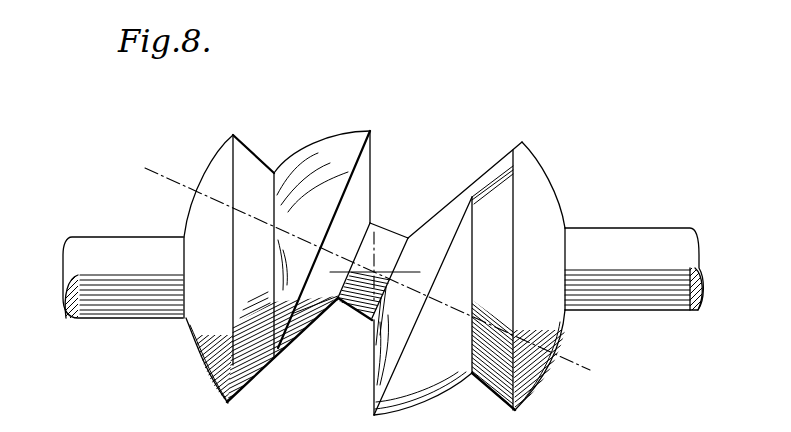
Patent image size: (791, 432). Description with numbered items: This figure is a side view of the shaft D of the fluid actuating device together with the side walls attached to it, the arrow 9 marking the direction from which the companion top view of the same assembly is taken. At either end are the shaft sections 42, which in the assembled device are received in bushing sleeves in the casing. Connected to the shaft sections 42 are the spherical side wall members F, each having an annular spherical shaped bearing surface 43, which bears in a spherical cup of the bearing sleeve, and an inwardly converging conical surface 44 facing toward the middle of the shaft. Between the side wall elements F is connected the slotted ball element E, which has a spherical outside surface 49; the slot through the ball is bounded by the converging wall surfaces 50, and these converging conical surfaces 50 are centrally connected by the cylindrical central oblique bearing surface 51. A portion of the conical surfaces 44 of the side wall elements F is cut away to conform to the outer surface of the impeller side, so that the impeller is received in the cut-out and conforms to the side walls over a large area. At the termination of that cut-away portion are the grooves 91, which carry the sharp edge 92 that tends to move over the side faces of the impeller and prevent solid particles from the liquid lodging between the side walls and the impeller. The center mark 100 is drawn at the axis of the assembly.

The arrow 9 is at (371, 66).
The shaft sections 42 is at (122, 243).
The annular spherical shaped bearing surfaces 43 is at (222, 158).
The inwardly converging conical surfaces 44 is at (255, 170).
The spherical outside surface 49 is at (352, 147).
The converging wall surfaces of the slot 50 is at (403, 303).
The cylindrical central oblique bearing surface 51 is at (387, 238).
The grooves 91 is at (496, 180).
The sharp edge 92 is at (489, 178).
The axis center 100 is at (373, 273).
The shaft D is at (127, 303).
The slotted ball element E is at (333, 147).
The side wall members F is at (247, 328).